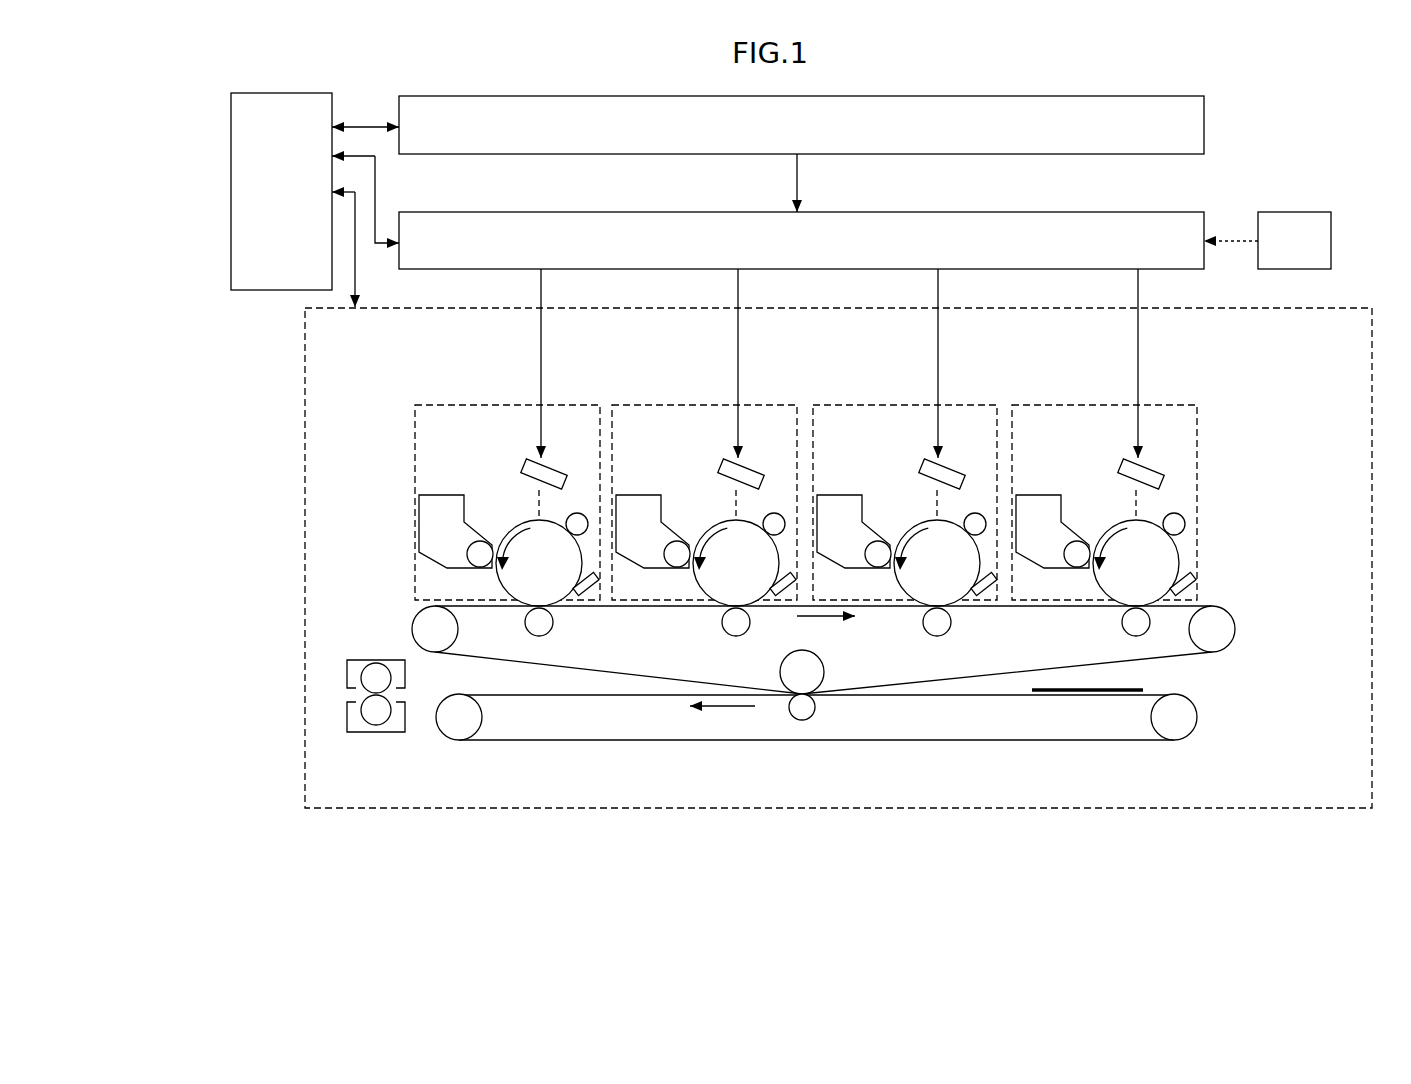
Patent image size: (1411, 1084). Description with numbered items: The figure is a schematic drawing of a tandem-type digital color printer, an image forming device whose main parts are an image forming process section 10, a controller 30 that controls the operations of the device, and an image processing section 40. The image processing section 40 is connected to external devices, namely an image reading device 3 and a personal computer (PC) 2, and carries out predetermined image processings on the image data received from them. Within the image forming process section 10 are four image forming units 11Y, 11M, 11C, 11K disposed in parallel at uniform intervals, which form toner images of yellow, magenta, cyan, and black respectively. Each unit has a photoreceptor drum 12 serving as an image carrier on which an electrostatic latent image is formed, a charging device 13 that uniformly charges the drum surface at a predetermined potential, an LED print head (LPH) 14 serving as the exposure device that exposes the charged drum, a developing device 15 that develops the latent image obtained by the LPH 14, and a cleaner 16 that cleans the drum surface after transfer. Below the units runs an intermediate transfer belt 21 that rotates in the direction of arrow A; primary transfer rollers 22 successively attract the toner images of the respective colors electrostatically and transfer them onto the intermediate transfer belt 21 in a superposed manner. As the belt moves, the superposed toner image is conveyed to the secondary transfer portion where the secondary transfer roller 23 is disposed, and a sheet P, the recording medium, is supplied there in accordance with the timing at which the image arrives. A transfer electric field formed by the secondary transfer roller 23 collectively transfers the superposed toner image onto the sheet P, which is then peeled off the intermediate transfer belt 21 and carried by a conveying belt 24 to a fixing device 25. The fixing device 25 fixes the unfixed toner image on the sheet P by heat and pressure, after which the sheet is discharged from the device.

The personal computer (PC) 2 is at (1300, 212).
The image reading device 3 is at (1204, 115).
The image forming process section 10 is at (303, 765).
The image forming unit 11Y is at (535, 479).
The image forming unit 11M is at (760, 403).
The image forming unit 11C is at (860, 403).
The image forming unit 11K is at (1170, 403).
The photoreceptor drum 12 is at (522, 524).
The charging device 13 is at (577, 513).
The LED print head (LPH) 14 is at (548, 462).
The developing device 15 is at (433, 495).
The cleaner 16 is at (590, 597).
The intermediate transfer belt 21 is at (1197, 655).
The primary transfer roller 22 is at (552, 630).
The secondary transfer roller 23 is at (815, 705).
The conveying belt 24 is at (497, 742).
The fixing device 25 is at (347, 668).
The controller 30 is at (231, 152).
The image processing section 40 is at (1194, 212).
The arrow A is at (818, 620).
The sheet P is at (1125, 686).